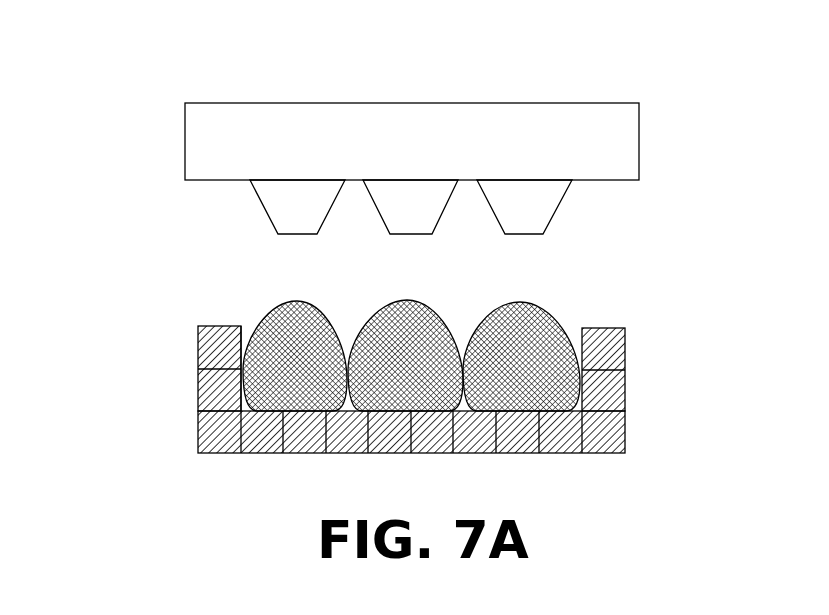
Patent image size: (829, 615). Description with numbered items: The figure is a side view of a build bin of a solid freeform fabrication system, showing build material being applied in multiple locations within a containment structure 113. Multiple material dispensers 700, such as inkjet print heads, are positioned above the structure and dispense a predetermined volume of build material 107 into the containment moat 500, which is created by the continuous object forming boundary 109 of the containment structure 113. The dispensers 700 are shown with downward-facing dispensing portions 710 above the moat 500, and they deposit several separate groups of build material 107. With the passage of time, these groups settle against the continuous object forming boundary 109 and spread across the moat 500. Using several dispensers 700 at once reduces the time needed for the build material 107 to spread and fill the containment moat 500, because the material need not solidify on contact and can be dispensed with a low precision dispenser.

The material dispensers 700 is at (632, 103).
The protrusions 710 is at (557, 213).
The build material 107 is at (275, 307).
The continuous object forming boundary 109 is at (246, 330).
The containment structure 113 is at (190, 383).
The containment moat 500 is at (411, 316).